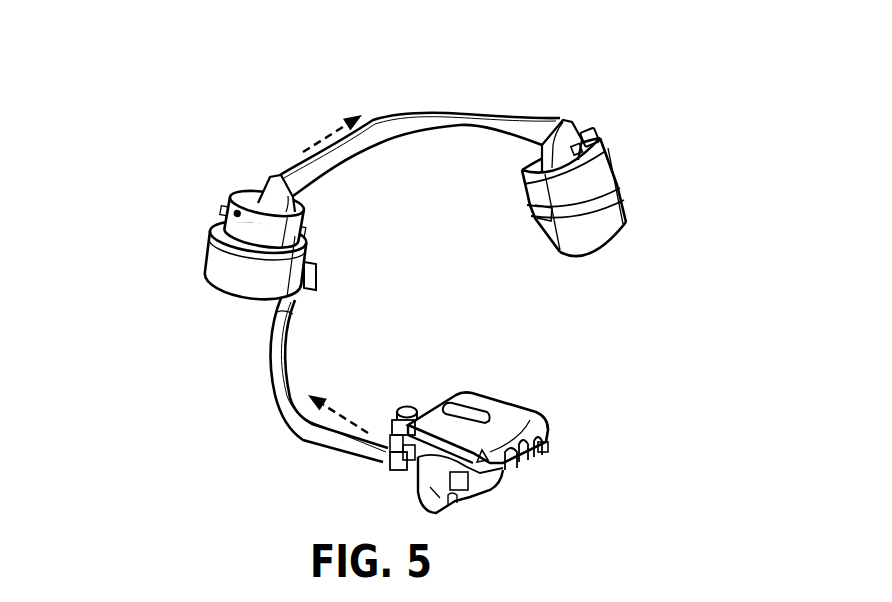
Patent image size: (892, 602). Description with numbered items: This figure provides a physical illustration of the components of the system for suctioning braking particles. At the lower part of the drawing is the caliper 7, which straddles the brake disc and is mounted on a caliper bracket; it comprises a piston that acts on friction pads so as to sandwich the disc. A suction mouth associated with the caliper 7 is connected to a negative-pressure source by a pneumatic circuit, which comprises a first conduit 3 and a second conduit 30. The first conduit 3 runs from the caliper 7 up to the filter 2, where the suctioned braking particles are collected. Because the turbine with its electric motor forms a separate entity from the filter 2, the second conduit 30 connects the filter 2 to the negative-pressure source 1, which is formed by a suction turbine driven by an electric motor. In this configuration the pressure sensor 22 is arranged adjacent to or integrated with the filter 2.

The negative-pressure source 1 is at (641, 140).
The filter 2 is at (187, 225).
The first conduit 3 is at (277, 390).
The caliper 7 is at (554, 379).
The pressure sensor 22 is at (317, 277).
The second conduit 30 is at (428, 115).